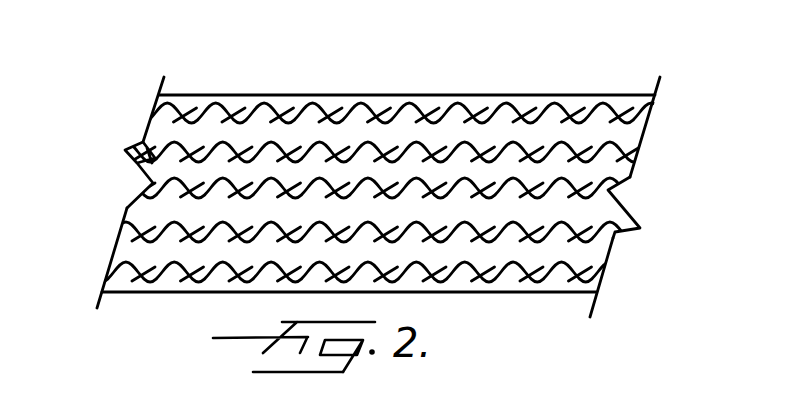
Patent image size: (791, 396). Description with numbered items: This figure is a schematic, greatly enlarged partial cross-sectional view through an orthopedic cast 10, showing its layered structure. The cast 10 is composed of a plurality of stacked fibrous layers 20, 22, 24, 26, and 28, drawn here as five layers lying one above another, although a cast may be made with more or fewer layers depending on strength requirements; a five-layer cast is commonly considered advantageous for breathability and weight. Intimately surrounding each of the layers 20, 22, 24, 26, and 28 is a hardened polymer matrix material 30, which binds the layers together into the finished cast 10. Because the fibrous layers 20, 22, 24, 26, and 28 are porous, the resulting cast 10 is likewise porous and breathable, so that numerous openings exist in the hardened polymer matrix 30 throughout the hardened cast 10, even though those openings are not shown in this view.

The cast 10 is at (371, 161).
The layer 20 is at (162, 114).
The layer 22 is at (136, 168).
The layer 24 is at (136, 194).
The layer 26 is at (128, 230).
The layer 28 is at (112, 268).
The hardened polymer matrix material 30 is at (622, 130).